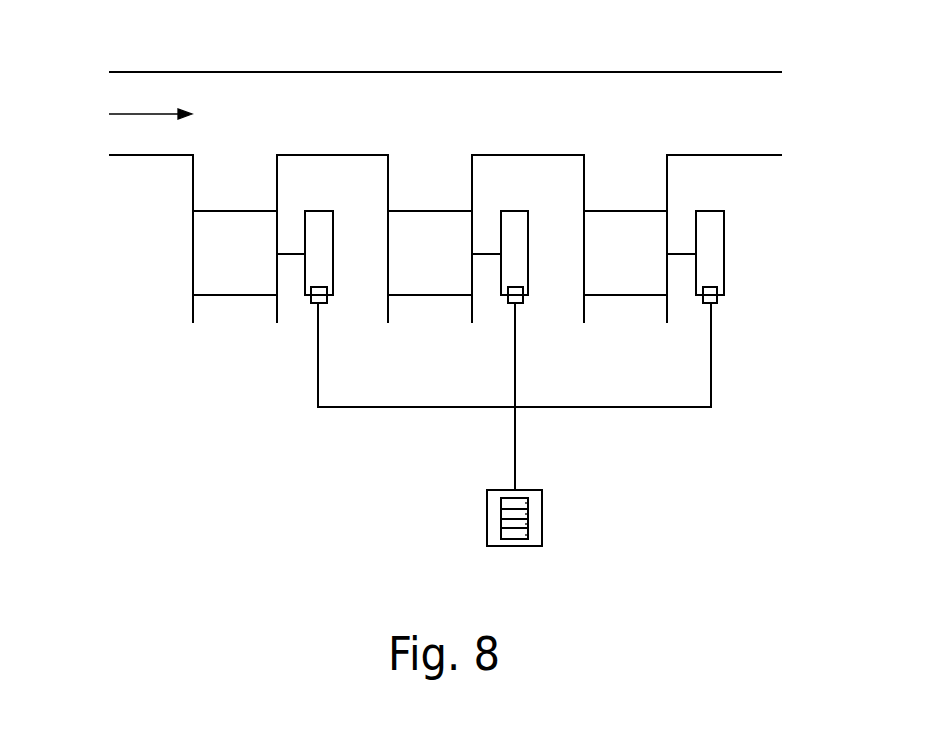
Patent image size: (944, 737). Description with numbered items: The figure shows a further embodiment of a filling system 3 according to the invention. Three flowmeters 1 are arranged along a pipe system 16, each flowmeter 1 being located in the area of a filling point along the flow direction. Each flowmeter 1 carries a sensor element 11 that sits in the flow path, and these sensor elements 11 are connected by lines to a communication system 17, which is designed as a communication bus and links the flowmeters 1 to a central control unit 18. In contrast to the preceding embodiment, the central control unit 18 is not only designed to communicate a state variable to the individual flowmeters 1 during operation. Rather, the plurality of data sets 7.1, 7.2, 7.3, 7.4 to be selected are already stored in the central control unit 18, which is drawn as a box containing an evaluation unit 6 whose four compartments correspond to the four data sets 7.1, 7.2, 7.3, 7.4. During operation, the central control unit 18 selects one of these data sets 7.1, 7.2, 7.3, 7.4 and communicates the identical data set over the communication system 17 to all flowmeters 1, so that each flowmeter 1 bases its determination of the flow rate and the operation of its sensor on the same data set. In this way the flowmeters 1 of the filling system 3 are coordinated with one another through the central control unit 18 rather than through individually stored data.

The flowmeter 1 is at (288, 198).
The filling system 3 is at (106, 541).
The evaluation unit 6 is at (501, 524).
The data set 7.1 is at (525, 503).
The data set 7.2 is at (525, 514).
The data set 7.3 is at (525, 524).
The data set 7.4 is at (525, 535).
The sensor element 11 is at (309, 315).
The pipe system 16 is at (375, 121).
The communication system 17 is at (390, 408).
The central control unit 18 is at (512, 546).